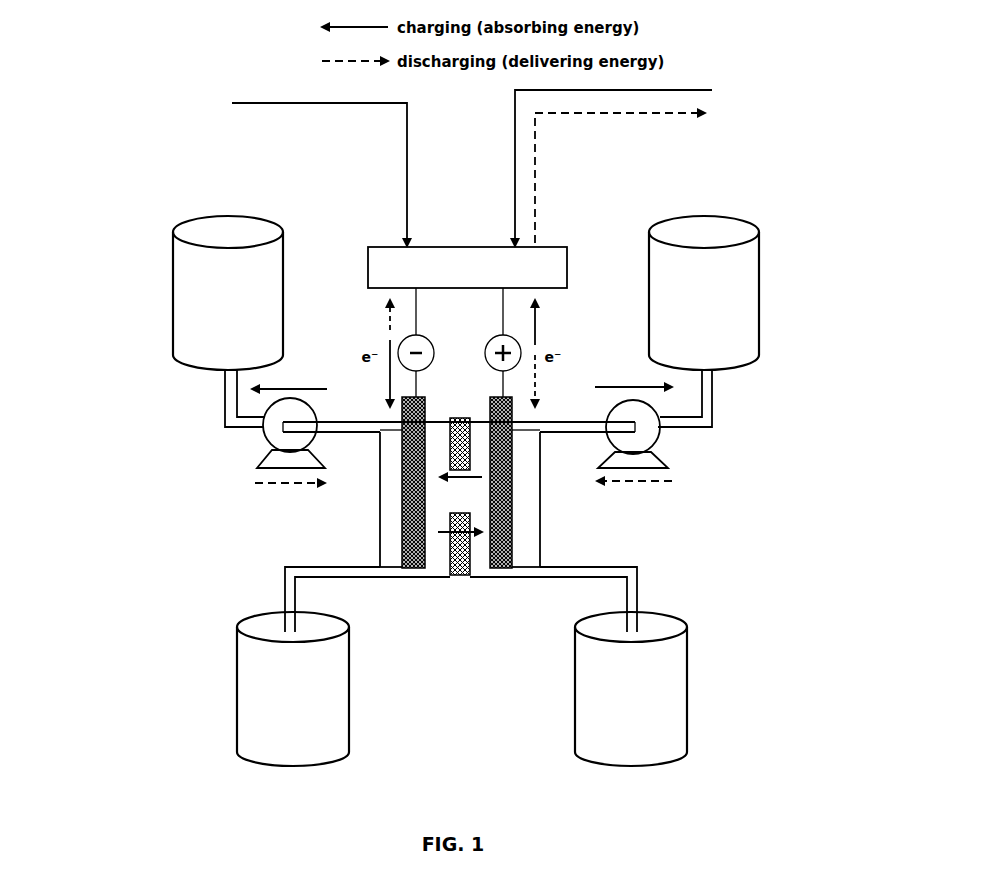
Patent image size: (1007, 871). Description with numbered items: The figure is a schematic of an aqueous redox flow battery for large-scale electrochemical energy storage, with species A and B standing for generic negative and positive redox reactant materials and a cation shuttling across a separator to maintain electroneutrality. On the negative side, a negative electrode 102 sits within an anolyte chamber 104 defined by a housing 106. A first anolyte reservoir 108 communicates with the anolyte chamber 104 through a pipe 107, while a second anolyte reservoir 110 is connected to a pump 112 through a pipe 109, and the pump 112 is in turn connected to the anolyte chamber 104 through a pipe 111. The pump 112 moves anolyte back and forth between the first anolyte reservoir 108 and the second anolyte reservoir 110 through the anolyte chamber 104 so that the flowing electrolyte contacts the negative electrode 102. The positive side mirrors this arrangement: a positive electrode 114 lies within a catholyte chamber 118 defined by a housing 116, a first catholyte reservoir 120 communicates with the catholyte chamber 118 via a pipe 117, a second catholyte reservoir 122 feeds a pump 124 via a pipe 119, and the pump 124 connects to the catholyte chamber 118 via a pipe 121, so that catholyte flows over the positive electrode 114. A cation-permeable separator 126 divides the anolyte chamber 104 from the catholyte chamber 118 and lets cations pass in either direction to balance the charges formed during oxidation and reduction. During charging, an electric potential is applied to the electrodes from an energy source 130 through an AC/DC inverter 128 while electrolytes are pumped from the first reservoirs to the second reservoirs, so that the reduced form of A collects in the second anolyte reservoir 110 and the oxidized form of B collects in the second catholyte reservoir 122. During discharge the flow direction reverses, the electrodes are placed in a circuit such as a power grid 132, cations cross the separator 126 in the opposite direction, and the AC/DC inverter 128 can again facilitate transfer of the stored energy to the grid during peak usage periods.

The negative electrode 102 is at (402, 483).
The anolyte chamber 104 is at (392, 464).
The housing 106 is at (380, 544).
The pipe 107 is at (350, 572).
The first anolyte reservoir 108 is at (282, 720).
The pipe 109 is at (232, 391).
The second anolyte reservoir 110 is at (195, 323).
The pipe 111 is at (268, 433).
The pump 112 is at (263, 438).
The positive electrode 114 is at (512, 483).
The housing 116 is at (540, 544).
The pipe 117 is at (575, 570).
The catholyte chamber 118 is at (527, 467).
The pipe 119 is at (707, 398).
The first catholyte reservoir 120 is at (630, 720).
The pipe 121 is at (653, 432).
The second catholyte reservoir 122 is at (717, 317).
The pump 124 is at (663, 438).
The cation-permeable separator 126 is at (458, 570).
The AC/DC inverter 128 is at (461, 247).
The energy source 130 is at (232, 103).
The power grid 132 is at (712, 90).